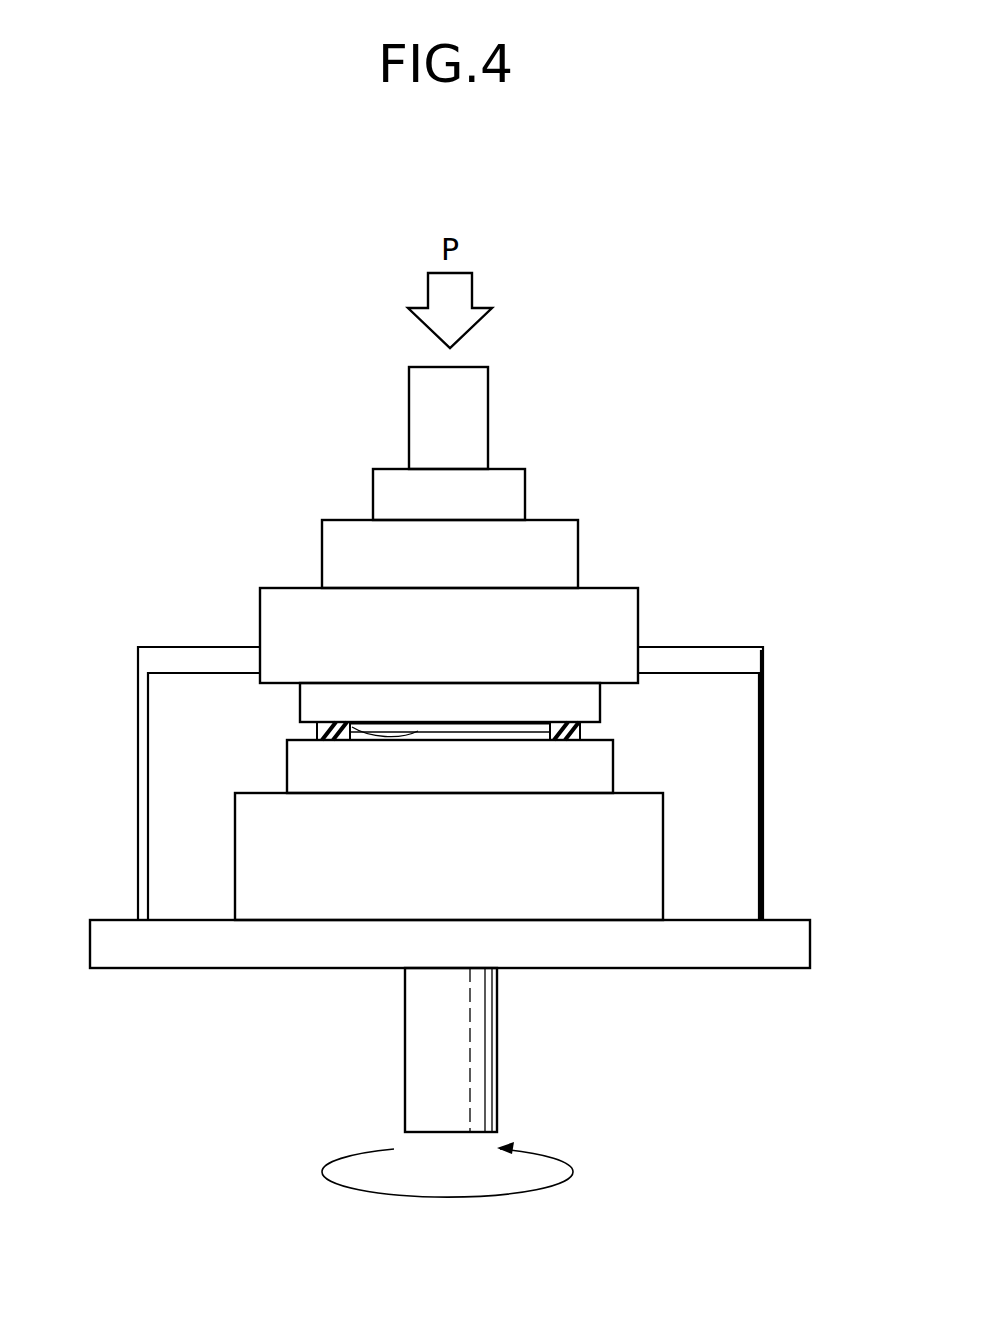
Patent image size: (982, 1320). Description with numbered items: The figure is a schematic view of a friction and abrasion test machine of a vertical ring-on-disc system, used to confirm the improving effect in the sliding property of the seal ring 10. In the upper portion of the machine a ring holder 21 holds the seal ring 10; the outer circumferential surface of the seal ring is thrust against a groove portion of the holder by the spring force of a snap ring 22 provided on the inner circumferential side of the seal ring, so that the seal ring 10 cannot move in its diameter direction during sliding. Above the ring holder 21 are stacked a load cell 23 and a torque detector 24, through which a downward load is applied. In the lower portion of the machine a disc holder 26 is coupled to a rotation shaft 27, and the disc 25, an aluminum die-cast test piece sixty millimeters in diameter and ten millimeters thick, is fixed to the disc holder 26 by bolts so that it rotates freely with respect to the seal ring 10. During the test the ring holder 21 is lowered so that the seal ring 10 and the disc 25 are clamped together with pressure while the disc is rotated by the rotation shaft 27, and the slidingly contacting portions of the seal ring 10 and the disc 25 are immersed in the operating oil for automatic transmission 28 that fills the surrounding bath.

The seal ring 10 is at (583, 730).
The ring holder 21 is at (600, 698).
The snap ring 22 is at (300, 720).
The load cell 23 is at (545, 556).
The torque detector 24 is at (490, 495).
The disc 25 is at (312, 772).
The disc holder 26 is at (258, 848).
The rotation shaft 27 is at (417, 1073).
The operating oil for automatic transmission 28 is at (730, 878).